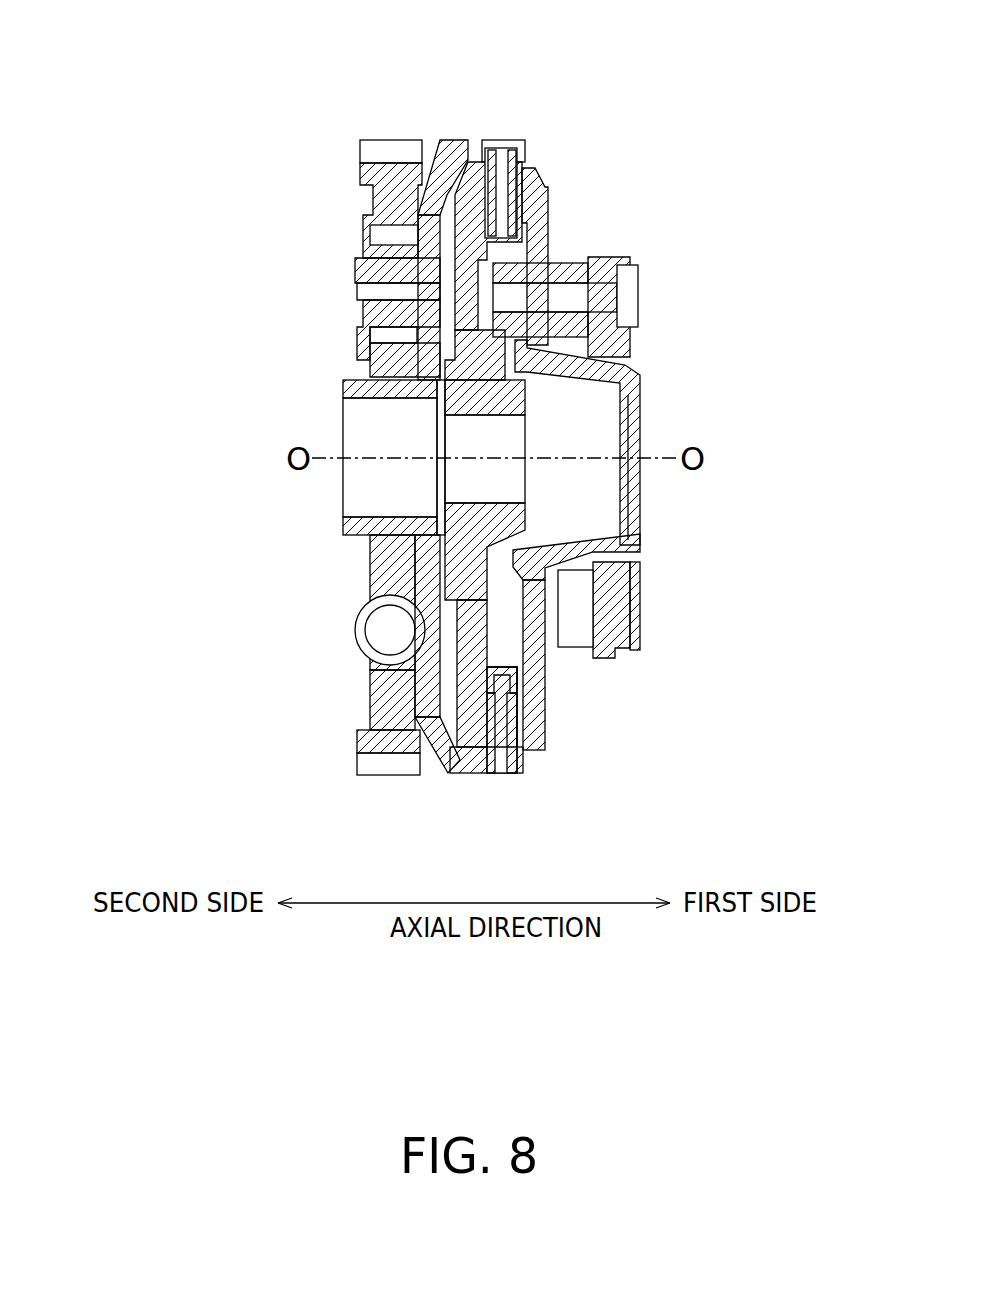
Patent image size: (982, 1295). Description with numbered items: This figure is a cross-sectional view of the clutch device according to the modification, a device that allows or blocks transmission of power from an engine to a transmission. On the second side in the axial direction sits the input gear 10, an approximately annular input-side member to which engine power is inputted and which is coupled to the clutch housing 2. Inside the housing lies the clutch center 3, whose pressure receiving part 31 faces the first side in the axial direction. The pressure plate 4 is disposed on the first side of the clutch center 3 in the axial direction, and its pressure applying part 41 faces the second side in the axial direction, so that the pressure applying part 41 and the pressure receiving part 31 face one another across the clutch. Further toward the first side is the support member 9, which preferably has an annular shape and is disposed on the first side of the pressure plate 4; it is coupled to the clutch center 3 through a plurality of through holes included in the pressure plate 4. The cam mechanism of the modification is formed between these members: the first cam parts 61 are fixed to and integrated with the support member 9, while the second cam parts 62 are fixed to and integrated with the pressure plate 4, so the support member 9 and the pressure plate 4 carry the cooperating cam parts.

The clutch housing 2 is at (447, 140).
The clutch center 3 is at (530, 510).
The pressure plate 4 is at (553, 213).
The support member 9 is at (610, 258).
The input gear 10 is at (360, 180).
The pressure receiving part 31 is at (478, 140).
The pressure applying part 41 is at (515, 185).
The first cam parts 61 is at (598, 660).
The second cam parts 62 is at (550, 650).